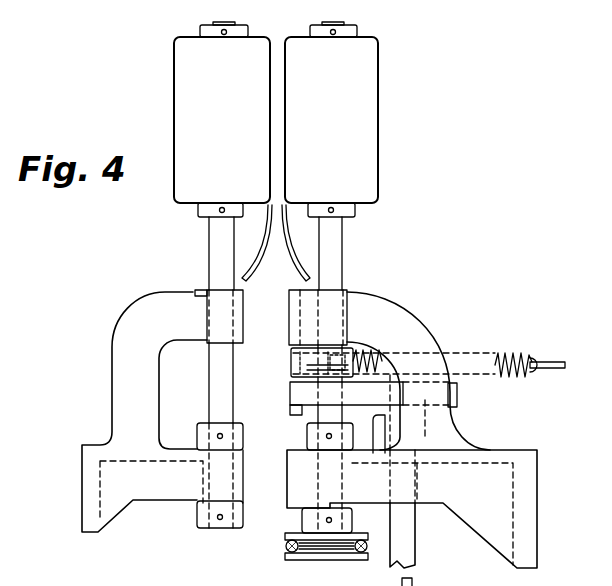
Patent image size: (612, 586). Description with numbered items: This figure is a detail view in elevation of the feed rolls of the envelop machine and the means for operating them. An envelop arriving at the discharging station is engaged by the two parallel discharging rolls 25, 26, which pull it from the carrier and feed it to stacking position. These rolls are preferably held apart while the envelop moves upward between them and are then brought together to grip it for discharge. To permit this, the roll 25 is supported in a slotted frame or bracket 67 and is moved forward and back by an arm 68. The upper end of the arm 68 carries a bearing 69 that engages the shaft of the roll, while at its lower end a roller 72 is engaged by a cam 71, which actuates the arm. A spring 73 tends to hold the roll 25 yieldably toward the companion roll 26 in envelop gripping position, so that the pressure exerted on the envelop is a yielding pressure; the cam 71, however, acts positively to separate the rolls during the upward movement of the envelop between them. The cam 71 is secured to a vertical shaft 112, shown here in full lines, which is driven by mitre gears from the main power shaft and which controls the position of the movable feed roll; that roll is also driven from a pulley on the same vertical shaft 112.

The discharging roll 25 is at (203, 96).
The discharging roll 26 is at (347, 118).
The slotted frame or bracket 67 is at (388, 318).
The arm 68 is at (302, 365).
The bearing 69 is at (307, 370).
The cam 71 is at (367, 393).
The roller 72 is at (297, 397).
The spring 73 is at (503, 357).
The vertical shaft 112 is at (408, 528).